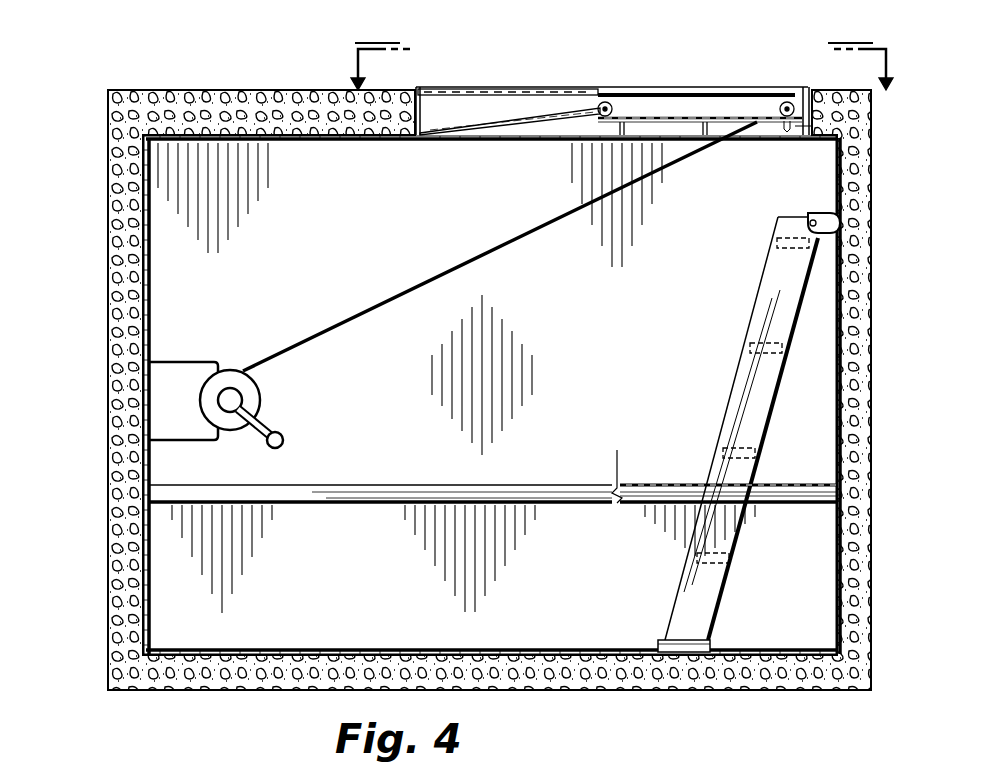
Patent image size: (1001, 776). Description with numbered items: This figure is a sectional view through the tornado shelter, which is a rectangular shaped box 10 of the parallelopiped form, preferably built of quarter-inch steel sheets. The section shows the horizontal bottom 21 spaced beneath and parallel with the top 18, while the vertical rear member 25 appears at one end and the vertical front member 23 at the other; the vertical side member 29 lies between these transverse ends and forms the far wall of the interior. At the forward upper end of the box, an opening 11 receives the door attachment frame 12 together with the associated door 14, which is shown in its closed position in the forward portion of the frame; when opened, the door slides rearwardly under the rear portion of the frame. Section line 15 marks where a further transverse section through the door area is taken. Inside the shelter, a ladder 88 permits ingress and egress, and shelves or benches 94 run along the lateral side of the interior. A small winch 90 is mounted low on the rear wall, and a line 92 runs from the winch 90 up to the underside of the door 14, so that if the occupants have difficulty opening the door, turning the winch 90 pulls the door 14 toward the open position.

The rectangular shaped box 10 is at (131, 83).
The opening 11 is at (763, 142).
The door attachment frame 12 is at (408, 93).
The door 14 is at (691, 92).
The section line 15- 15 is at (622, 50).
The top 18 is at (345, 141).
The horizontal bottom 21 is at (542, 649).
The vertical front member 23 is at (836, 576).
The vertical rear member 25 is at (150, 323).
The vertical side member 29 is at (609, 393).
The ladder 88 is at (756, 330).
The winch 90 is at (252, 395).
The line 92 is at (470, 264).
The shelves or benches 94 is at (516, 484).